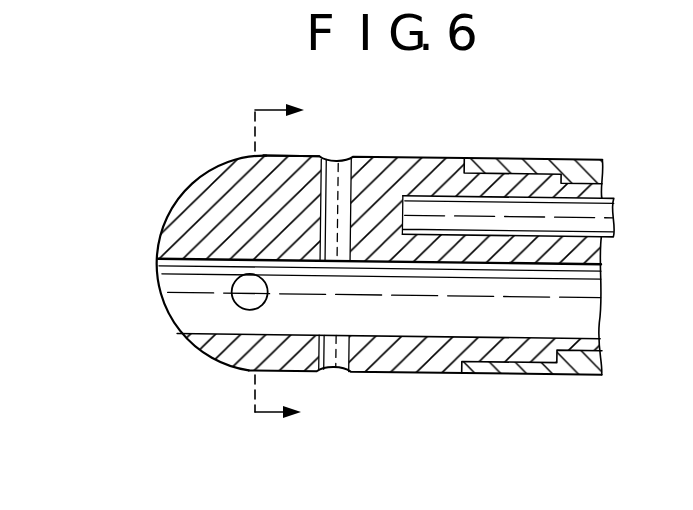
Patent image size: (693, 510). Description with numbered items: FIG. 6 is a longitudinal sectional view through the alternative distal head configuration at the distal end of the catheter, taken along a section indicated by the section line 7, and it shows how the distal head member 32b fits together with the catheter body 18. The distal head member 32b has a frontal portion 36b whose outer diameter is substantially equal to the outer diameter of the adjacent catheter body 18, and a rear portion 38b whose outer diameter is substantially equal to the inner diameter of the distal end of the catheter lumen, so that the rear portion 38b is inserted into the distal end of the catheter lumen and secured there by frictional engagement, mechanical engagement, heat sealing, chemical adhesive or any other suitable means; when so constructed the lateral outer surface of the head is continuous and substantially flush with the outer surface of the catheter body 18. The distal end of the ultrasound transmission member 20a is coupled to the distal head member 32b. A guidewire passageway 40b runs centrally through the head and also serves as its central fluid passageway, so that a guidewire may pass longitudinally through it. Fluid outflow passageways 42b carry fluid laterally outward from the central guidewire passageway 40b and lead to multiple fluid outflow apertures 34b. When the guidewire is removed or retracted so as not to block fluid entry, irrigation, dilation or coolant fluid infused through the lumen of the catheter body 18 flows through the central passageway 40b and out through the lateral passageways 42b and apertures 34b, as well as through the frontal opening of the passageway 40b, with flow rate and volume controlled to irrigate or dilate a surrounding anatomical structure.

The section line 7- 7 is at (279, 266).
The catheter body 18 is at (508, 157).
The slot 20a is at (610, 198).
The tip body 32b is at (353, 265).
The fluid outflow apertures 34b is at (341, 152).
The frontal portion 36b is at (300, 157).
The rear portion 38b is at (501, 352).
The guidewire passageway 40b is at (208, 298).
The fluid outflow passageways 42b is at (340, 337).